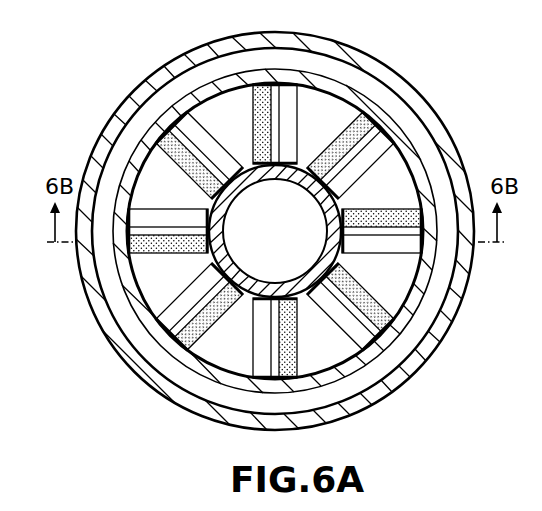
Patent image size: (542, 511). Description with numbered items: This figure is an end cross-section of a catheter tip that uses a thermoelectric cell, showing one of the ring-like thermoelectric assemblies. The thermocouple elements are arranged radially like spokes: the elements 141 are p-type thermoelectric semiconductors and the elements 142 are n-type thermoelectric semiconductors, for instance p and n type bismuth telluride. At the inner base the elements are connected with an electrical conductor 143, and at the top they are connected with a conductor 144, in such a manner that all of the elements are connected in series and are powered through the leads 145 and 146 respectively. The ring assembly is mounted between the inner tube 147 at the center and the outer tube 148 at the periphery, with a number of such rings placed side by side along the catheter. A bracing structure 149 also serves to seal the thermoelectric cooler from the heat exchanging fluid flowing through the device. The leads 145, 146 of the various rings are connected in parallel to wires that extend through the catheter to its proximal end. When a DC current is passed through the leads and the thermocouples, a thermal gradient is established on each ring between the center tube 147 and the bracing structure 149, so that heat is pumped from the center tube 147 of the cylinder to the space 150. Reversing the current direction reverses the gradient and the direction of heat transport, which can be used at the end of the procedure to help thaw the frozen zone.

The p-type thermoelectric semiconductor element 141 is at (203, 258).
The n-type thermoelectric semiconductor element 142 is at (333, 251).
The electrical conductor 143 is at (280, 299).
The conductor 144 is at (142, 158).
The lead 145 is at (281, 180).
The lead 146 is at (275, 162).
The inner tube 147 is at (208, 205).
The outer tube 148 is at (410, 379).
The bracing structure 149 is at (200, 85).
The space 150 is at (390, 102).